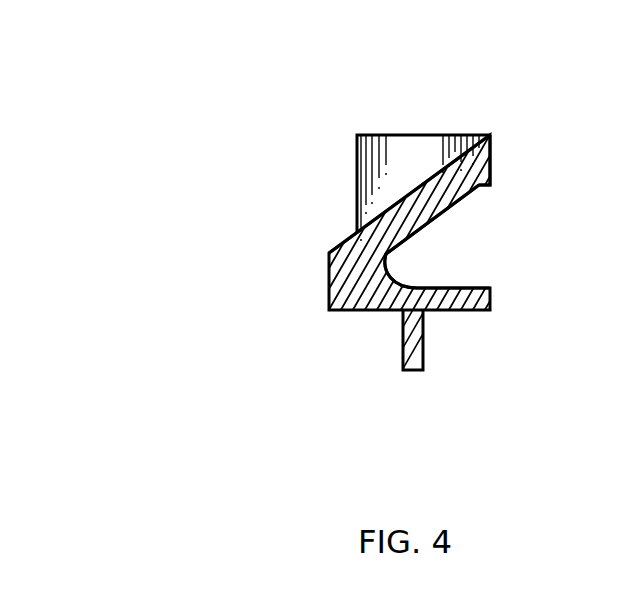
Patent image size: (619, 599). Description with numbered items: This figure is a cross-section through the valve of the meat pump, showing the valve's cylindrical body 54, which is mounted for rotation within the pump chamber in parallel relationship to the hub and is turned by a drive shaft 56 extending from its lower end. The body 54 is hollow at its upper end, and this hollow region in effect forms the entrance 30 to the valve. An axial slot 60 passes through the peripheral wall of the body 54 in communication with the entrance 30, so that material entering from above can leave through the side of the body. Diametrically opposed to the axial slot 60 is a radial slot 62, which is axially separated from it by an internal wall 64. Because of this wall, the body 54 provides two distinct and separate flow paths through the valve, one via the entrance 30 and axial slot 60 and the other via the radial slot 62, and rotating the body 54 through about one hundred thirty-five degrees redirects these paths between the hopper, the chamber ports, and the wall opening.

The entrance 30 is at (414, 148).
The cylindrical body 54 is at (492, 162).
The drive shaft 56 is at (423, 347).
The axial slot 60 is at (357, 167).
The radial slot 62 is at (452, 287).
The internal wall 64 is at (390, 215).